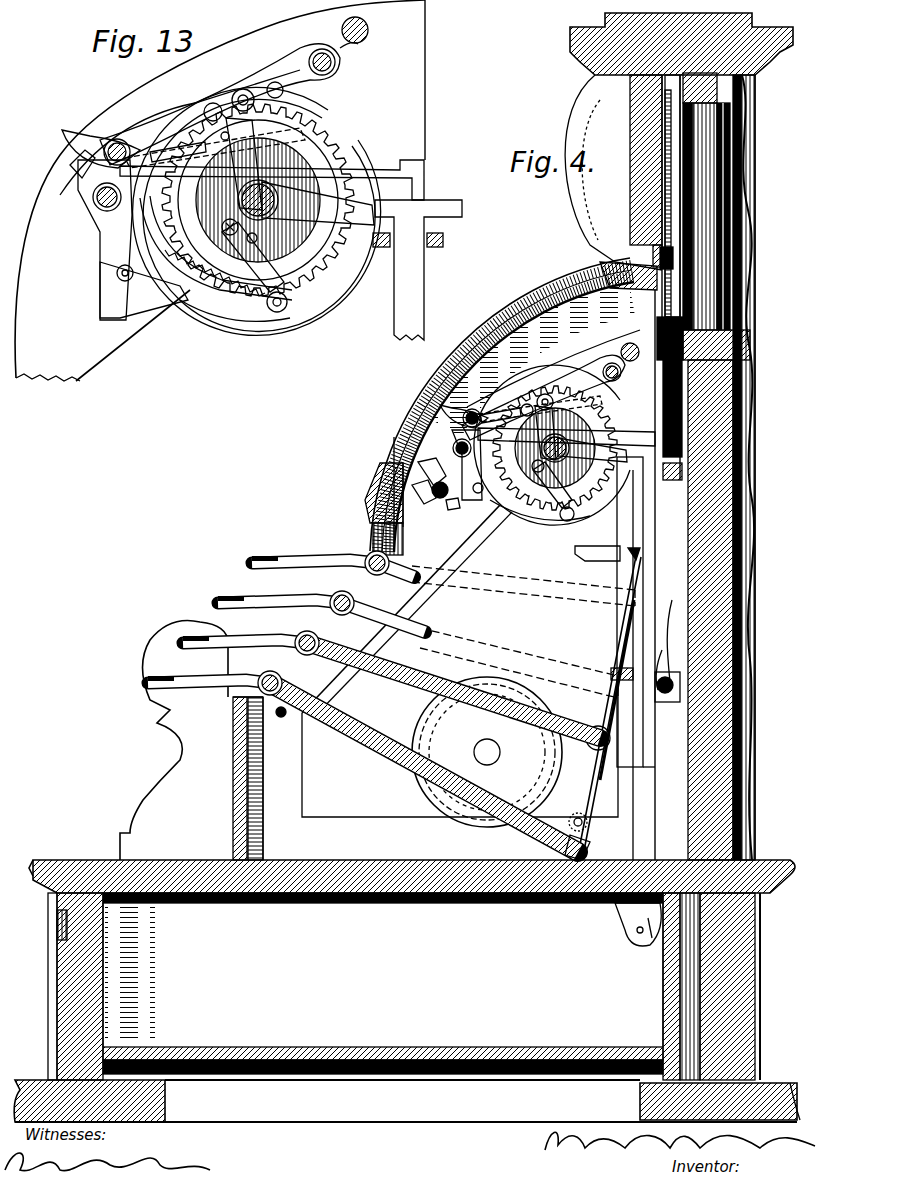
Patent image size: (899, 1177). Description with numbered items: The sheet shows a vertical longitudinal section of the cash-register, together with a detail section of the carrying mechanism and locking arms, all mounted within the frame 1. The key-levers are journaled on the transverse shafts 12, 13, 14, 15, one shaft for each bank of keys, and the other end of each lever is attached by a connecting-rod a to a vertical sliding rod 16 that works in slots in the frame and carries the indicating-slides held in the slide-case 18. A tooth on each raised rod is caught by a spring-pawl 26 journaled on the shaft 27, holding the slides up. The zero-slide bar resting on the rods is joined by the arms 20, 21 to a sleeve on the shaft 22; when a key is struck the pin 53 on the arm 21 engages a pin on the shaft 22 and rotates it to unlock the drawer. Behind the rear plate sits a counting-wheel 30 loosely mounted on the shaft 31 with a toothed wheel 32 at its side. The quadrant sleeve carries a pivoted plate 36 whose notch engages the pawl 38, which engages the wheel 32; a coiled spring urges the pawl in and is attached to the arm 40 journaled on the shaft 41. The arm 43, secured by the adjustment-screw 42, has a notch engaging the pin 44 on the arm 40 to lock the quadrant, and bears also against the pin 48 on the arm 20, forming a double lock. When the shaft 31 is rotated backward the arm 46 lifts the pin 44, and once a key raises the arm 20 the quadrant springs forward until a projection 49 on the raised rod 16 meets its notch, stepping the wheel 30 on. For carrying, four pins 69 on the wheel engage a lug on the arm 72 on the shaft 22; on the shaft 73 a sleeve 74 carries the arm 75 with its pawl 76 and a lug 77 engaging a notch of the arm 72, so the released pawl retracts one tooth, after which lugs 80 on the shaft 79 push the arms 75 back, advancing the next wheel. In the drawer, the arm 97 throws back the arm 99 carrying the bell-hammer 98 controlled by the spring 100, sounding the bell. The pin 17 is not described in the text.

In FIG. 4, the frame 1 is at (469, 674).
In FIG. 4, the shaft 12 is at (363, 761).
In FIG. 4, the shaft 13 is at (382, 580).
In FIG. 4, the shaft 14 is at (309, 657).
In FIG. 4, the shaft 15 is at (660, 676).
In FIG. 13, the vertical sliding rod 16 is at (417, 270).
In FIG. 4, the vertical sliding rod 16 is at (636, 612).
In FIG. 4, the pin 17 is at (634, 558).
In FIG. 4, the slide-case 18 is at (613, 193).
In FIG. 13, the arm 20 is at (215, 148).
In FIG. 4, the arm 20 is at (540, 410).
In FIG. 13, the arm 21 is at (272, 178).
In FIG. 4, the arm 21 is at (566, 437).
In FIG. 13, the shaft 22 is at (112, 140).
In FIG. 4, the shaft 22 is at (474, 410).
In FIG. 4, the spring-pawl 26 is at (671, 643).
In FIG. 4, the shaft 27 is at (667, 691).
In FIG. 13, the wheel 30 is at (258, 322).
In FIG. 4, the wheel 30 is at (540, 519).
In FIG. 13, the shaft 31 is at (240, 198).
In FIG. 4, the shaft 31 is at (553, 448).
In FIG. 13, the toothed wheel 32 is at (260, 200).
In FIG. 4, the toothed wheel 32 is at (555, 448).
In FIG. 13, the plate 36 is at (272, 250).
In FIG. 4, the plate 36 is at (557, 485).
In FIG. 13, the pawl 38 is at (282, 312).
In FIG. 4, the pawl 38 is at (570, 523).
In FIG. 13, the arm 40 is at (220, 104).
In FIG. 4, the arm 40 is at (543, 397).
In FIG. 13, the shaft 41 is at (340, 66).
In FIG. 4, the shaft 41 is at (621, 362).
In FIG. 13, the adjustment-screw 42 is at (215, 218).
In FIG. 4, the adjustment-screw 42 is at (528, 469).
In FIG. 13, the arm 43 is at (244, 164).
In FIG. 4, the arm 43 is at (543, 433).
In FIG. 13, the pin 44 is at (243, 101).
In FIG. 4, the pin 44 is at (535, 401).
In FIG. 13, the arm 46 is at (318, 203).
In FIG. 4, the arm 46 is at (592, 454).
In FIG. 13, the pin 48 is at (236, 136).
In FIG. 4, the projection 49 is at (597, 553).
In FIG. 13, the pin 53 is at (178, 156).
In FIG. 4, the pin 53 is at (500, 421).
In FIG. 13, the pin 69 is at (206, 88).
In FIG. 4, the pin 69 is at (555, 446).
In FIG. 13, the arm 72 is at (60, 140).
In FIG. 4, the arm 72 is at (464, 415).
In FIG. 13, the shaft 73 is at (94, 202).
In FIG. 4, the shaft 73 is at (455, 448).
In FIG. 13, the sleeve 74 is at (116, 214).
In FIG. 4, the sleeve 74 is at (467, 465).
In FIG. 13, the arm 75 is at (118, 264).
In FIG. 4, the arm 75 is at (481, 489).
In FIG. 13, the pawl 76 is at (172, 294).
In FIG. 13, the lug 77 is at (80, 170).
In FIG. 4, the shaft 79 is at (459, 492).
In FIG. 4, the lug 80 is at (431, 481).
In FIG. 4, the arm 97 is at (638, 932).
In FIG. 4, the bell-hammer 98 is at (519, 752).
In FIG. 4, the arm 99 is at (585, 847).
In FIG. 4, the spring 100 is at (588, 824).
In FIG. 4, the connecting-rod a is at (620, 620).